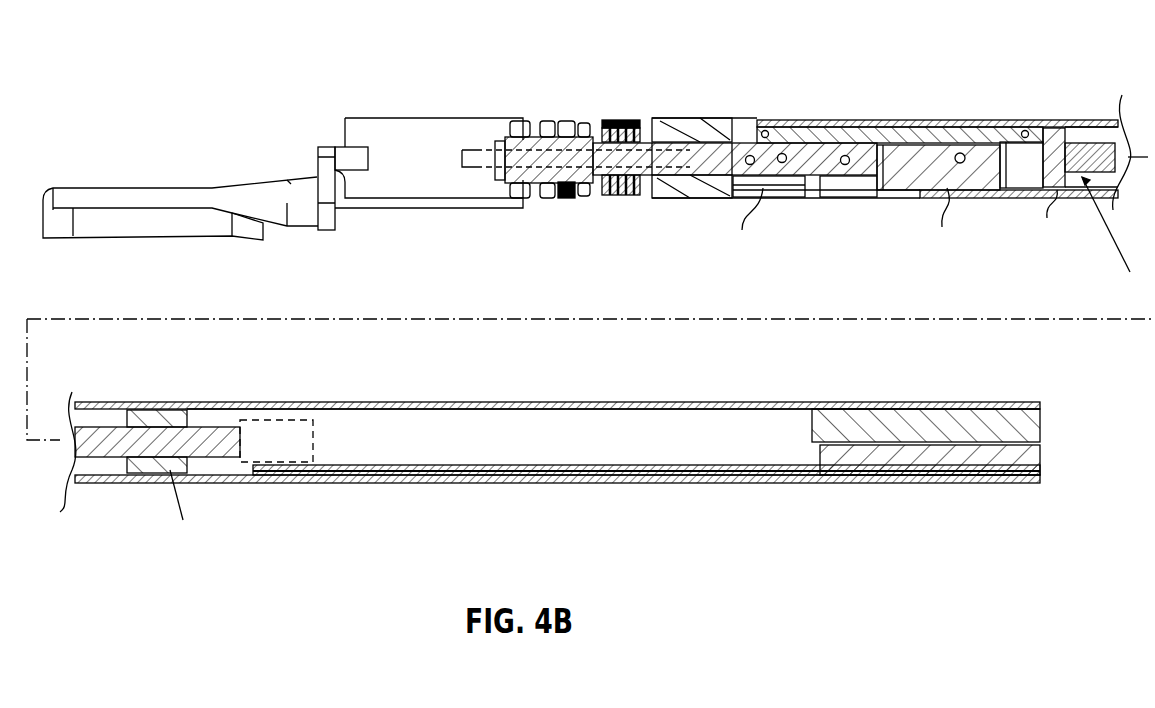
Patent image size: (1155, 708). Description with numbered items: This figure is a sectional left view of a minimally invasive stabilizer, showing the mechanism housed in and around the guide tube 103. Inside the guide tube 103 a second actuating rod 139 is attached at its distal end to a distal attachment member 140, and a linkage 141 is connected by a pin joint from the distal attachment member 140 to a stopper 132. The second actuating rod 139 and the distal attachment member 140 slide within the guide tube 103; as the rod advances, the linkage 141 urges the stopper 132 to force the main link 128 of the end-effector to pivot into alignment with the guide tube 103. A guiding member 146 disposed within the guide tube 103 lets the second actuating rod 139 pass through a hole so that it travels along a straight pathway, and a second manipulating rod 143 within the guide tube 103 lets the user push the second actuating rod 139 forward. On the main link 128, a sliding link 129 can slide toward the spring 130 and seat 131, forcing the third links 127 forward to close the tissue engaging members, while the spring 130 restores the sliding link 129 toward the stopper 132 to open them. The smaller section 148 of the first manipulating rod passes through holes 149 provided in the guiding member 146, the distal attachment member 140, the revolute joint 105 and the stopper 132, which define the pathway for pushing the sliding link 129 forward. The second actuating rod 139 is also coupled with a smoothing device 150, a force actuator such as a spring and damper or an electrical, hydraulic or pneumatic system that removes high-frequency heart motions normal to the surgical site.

The guide tube 103 is at (972, 121).
The revolute joint 105 is at (853, 185).
The third links 127 is at (469, 150).
The main link 128 is at (700, 130).
The sliding link 129 is at (691, 198).
The spring 130 is at (622, 120).
The seat 131 is at (588, 121).
The stopper 132 is at (738, 120).
The second actuating rod 139 is at (98, 458).
The distal attachment member 140 is at (1045, 142).
The linkage 141 is at (810, 121).
The second manipulating rod 143 is at (975, 418).
The guiding member 146 is at (147, 417).
The smaller section 148 is at (356, 472).
The holes 149 is at (621, 370).
The smoothing device 150 is at (273, 367).